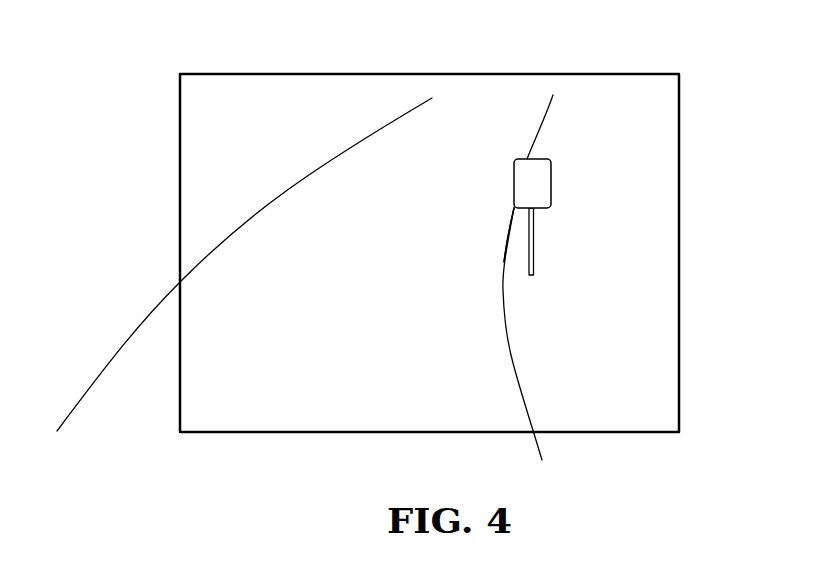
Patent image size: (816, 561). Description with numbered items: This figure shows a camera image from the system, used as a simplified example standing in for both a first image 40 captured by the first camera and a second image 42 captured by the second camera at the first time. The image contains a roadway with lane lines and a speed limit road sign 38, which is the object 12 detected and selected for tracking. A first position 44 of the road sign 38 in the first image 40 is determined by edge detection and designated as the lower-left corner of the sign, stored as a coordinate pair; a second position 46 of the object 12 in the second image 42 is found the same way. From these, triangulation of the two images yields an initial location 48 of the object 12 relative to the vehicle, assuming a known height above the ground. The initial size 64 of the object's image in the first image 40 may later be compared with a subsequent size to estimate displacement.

The object 12 is at (616, 155).
The road sign 38 is at (552, 173).
The first image 40 is at (157, 122).
The second image 42 is at (141, 196).
The first position 44 is at (515, 207).
The second position 46 is at (515, 208).
The initial location 48 is at (515, 208).
The initial size 64 is at (556, 204).